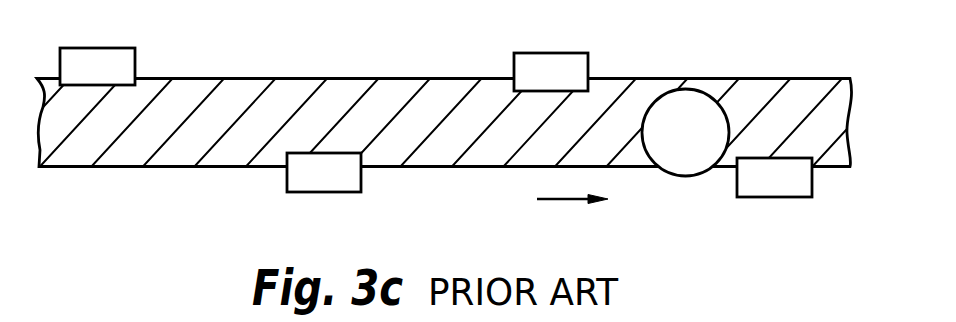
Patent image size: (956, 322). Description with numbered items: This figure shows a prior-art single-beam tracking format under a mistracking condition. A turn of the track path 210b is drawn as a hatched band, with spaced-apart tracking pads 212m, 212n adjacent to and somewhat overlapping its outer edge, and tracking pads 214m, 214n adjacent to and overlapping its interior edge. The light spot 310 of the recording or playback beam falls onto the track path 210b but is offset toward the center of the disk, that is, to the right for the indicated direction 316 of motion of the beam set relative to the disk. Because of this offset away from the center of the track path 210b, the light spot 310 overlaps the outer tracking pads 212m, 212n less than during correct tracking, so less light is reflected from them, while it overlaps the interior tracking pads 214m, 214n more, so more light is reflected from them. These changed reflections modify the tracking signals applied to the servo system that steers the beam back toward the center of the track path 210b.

The track path turn 210b is at (763, 78).
The tracking pad 212m is at (95, 48).
The tracking pad 212n is at (544, 53).
The tracking pad 214m is at (332, 192).
The tracking pad 214n is at (776, 197).
The light spot 310 is at (690, 177).
The direction of motion 316 is at (572, 203).